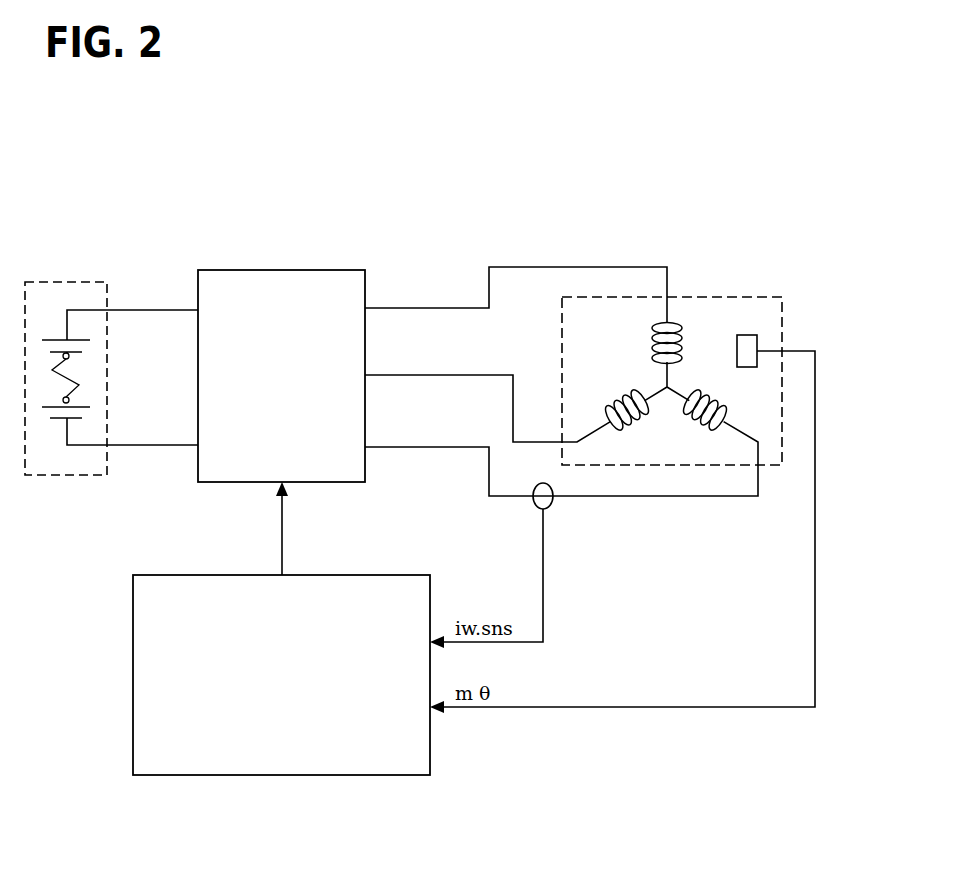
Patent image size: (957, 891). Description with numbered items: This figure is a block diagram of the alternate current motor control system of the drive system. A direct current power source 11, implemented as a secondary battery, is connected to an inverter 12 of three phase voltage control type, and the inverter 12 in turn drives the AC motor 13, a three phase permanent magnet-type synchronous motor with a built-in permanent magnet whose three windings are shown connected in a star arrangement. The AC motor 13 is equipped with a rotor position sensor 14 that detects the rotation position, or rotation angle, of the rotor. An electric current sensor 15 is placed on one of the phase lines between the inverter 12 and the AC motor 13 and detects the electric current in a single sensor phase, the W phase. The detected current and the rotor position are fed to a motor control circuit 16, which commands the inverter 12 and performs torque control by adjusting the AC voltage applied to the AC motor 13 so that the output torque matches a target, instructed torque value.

The direct current power source 11 is at (57, 282).
The inverter 12 is at (281, 270).
The AC motor 13 is at (735, 297).
The rotor position sensor 14 is at (747, 335).
The electric current sensor 15 is at (549, 509).
The motor control circuit 16 is at (279, 777).